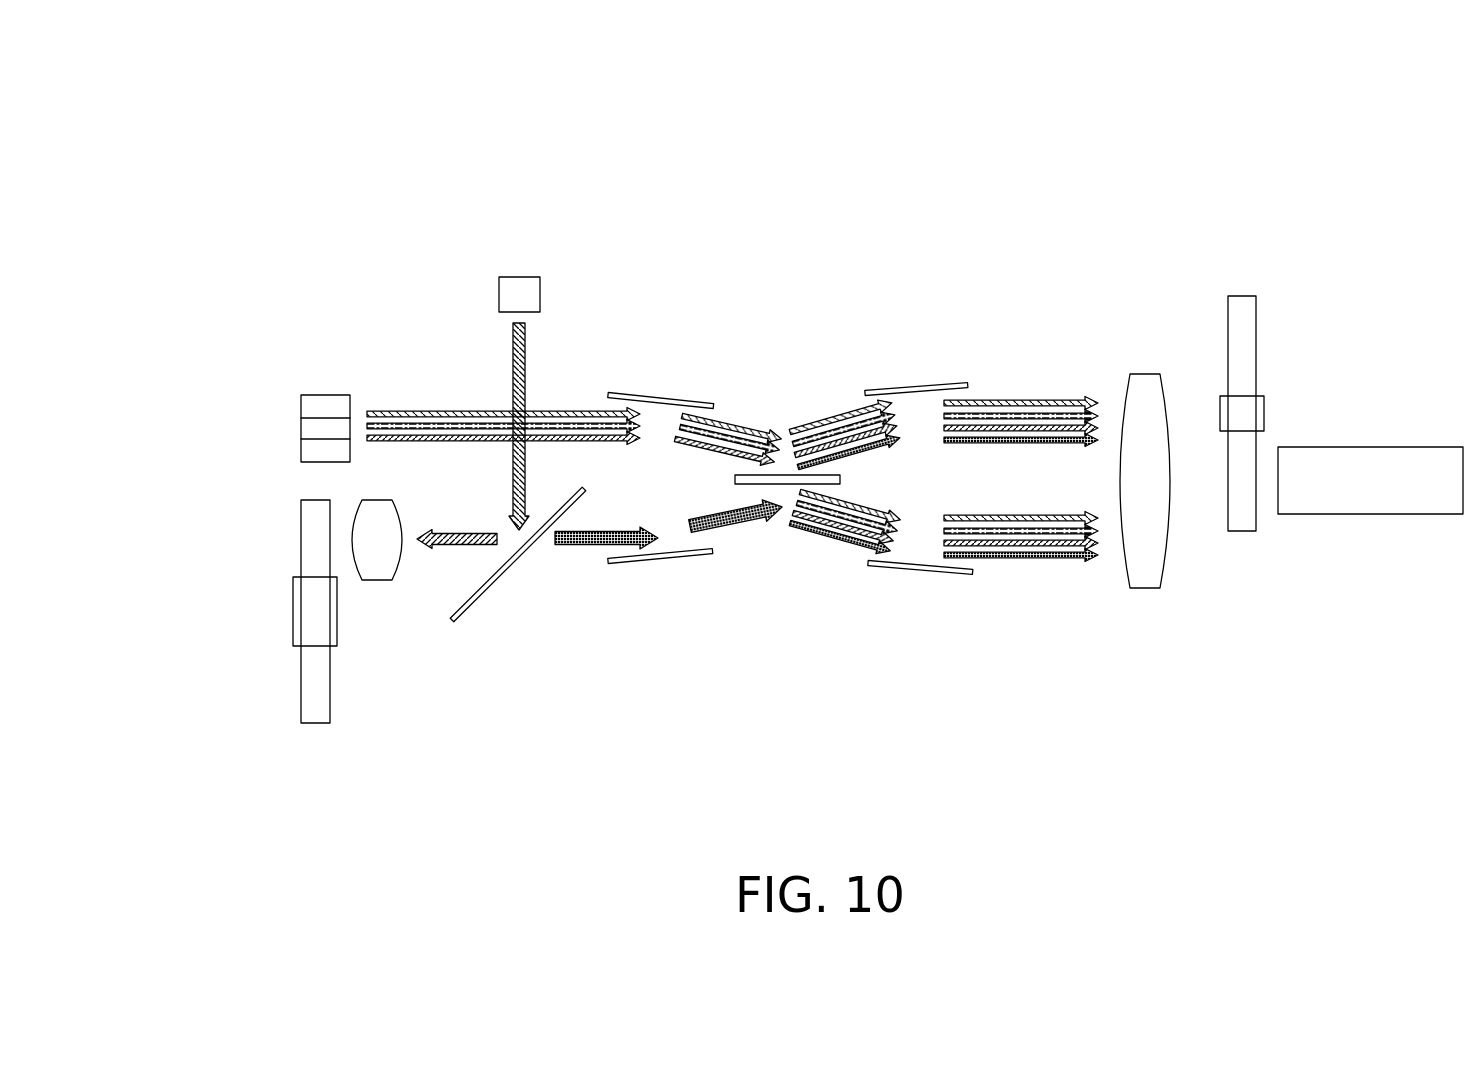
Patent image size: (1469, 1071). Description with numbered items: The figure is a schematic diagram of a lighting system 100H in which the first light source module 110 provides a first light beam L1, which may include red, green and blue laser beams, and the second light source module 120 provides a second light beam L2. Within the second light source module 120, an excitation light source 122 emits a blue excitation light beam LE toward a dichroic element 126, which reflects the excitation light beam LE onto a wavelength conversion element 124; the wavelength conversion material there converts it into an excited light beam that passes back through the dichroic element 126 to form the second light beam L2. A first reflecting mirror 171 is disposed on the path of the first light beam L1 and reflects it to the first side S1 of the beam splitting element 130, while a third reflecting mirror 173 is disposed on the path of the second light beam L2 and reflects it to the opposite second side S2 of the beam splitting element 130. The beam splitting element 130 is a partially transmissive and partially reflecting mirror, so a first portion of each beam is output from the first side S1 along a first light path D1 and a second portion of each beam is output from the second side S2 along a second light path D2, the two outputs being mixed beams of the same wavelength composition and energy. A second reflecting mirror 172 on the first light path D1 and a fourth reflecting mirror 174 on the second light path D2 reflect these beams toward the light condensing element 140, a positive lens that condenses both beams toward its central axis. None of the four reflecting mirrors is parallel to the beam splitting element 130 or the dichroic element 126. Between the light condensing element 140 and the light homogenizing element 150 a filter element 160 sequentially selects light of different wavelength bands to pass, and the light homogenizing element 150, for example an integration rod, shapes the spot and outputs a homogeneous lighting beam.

The lighting system 100H is at (1420, 800).
The first light source module 110 is at (163, 377).
The second light source module 120 is at (182, 37).
The excitation light source 122 is at (516, 277).
The wavelength conversion element 124 is at (316, 724).
The dichroic element 126 is at (486, 598).
The beam splitting element 130 is at (840, 480).
The light condensing element 140 is at (1145, 375).
The light homogenizing element 150 is at (1385, 457).
The filter element 160 is at (1242, 302).
The first reflecting mirror 171 is at (660, 398).
The second reflecting mirror 172 is at (917, 387).
The third reflecting mirror 173 is at (665, 562).
The fourth reflecting mirror 174 is at (920, 574).
The first light beam L1 is at (390, 412).
The second light beam L2 is at (583, 548).
The excitation light beam LE is at (525, 352).
The first side S1 is at (786, 470).
The second side S2 is at (785, 490).
The first light path D1 is at (1027, 404).
The second light path D2 is at (1030, 560).